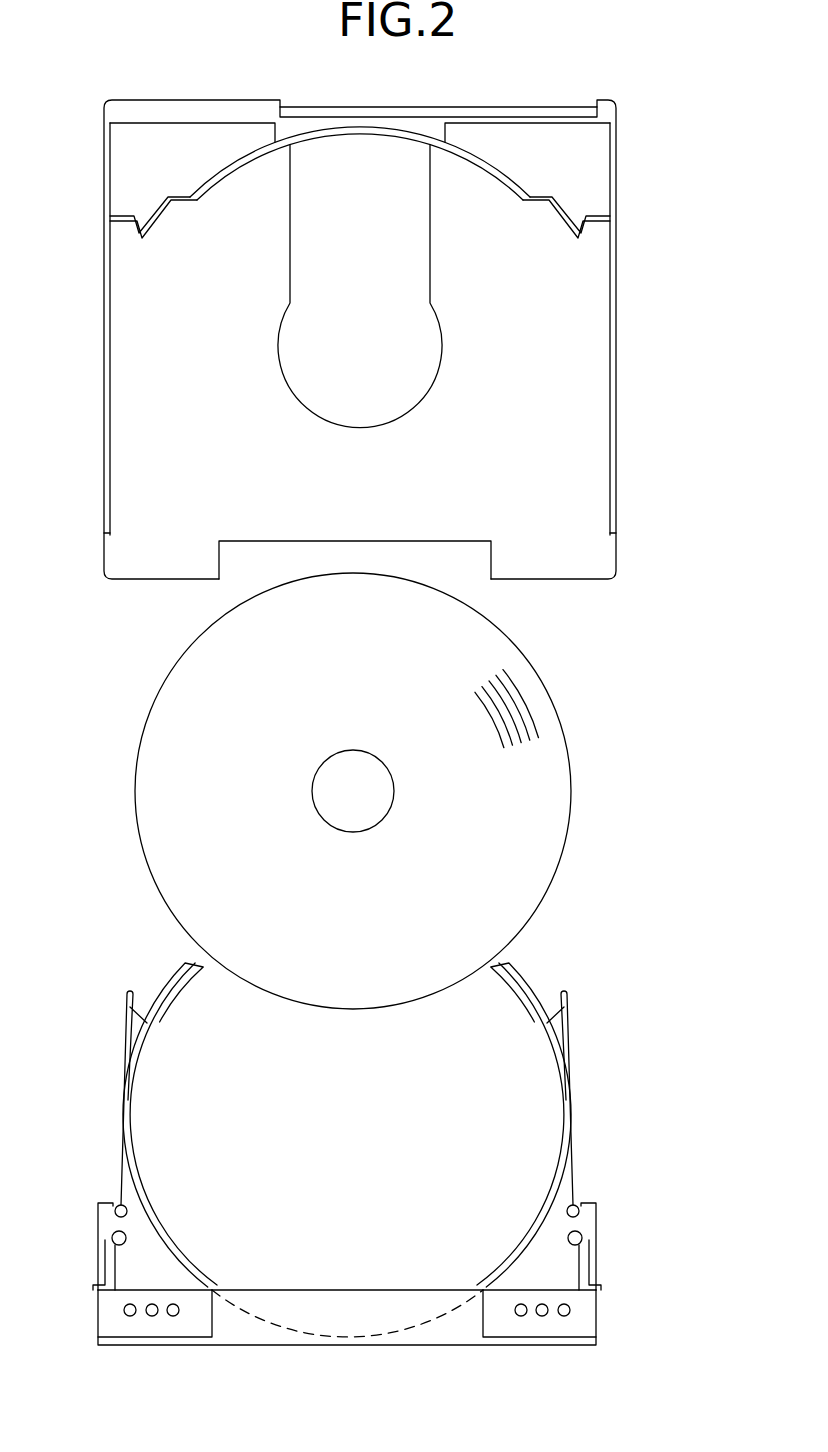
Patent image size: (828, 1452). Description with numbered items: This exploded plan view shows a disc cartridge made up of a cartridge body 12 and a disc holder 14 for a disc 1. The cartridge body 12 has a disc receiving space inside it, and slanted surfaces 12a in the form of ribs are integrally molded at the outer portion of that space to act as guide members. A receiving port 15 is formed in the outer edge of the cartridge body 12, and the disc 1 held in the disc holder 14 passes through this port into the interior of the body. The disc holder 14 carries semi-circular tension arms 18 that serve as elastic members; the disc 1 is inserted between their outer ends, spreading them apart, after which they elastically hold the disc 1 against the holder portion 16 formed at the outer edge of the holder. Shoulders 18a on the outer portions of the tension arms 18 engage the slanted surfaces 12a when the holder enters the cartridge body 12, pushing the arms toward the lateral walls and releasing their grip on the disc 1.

The disc 1 is at (168, 685).
The cartridge body 12 is at (110, 110).
The slanted surfaces 12a is at (601, 201).
The disc holder 14 is at (542, 1340).
The receiving port 15 is at (438, 549).
The holder portion 16 is at (372, 1287).
The tension arms 18 is at (162, 990).
The shoulders 18a is at (128, 1028).